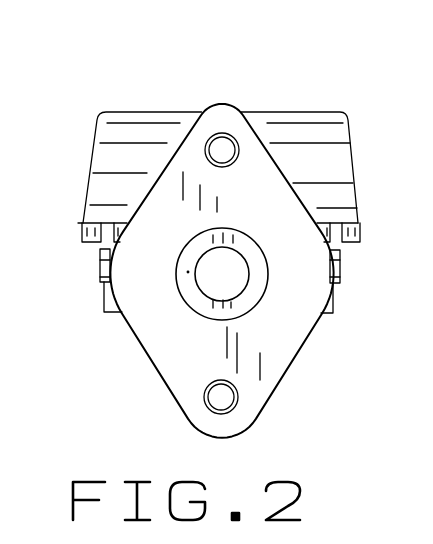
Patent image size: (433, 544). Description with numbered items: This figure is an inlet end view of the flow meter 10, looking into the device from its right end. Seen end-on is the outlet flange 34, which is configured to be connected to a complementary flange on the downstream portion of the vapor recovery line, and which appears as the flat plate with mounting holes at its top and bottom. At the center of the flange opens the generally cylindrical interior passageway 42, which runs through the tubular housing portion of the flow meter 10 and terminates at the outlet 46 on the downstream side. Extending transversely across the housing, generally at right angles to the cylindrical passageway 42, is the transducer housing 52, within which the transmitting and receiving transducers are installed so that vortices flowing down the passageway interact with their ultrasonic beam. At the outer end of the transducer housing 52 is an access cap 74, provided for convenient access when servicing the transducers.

The flow meter 10 is at (225, 76).
The outlet flange 34 is at (84, 162).
The cylindrical interior passageway 42 is at (204, 270).
The outlet 46 is at (232, 268).
The transducer housing 52 is at (107, 298).
The access cap 74 is at (341, 262).